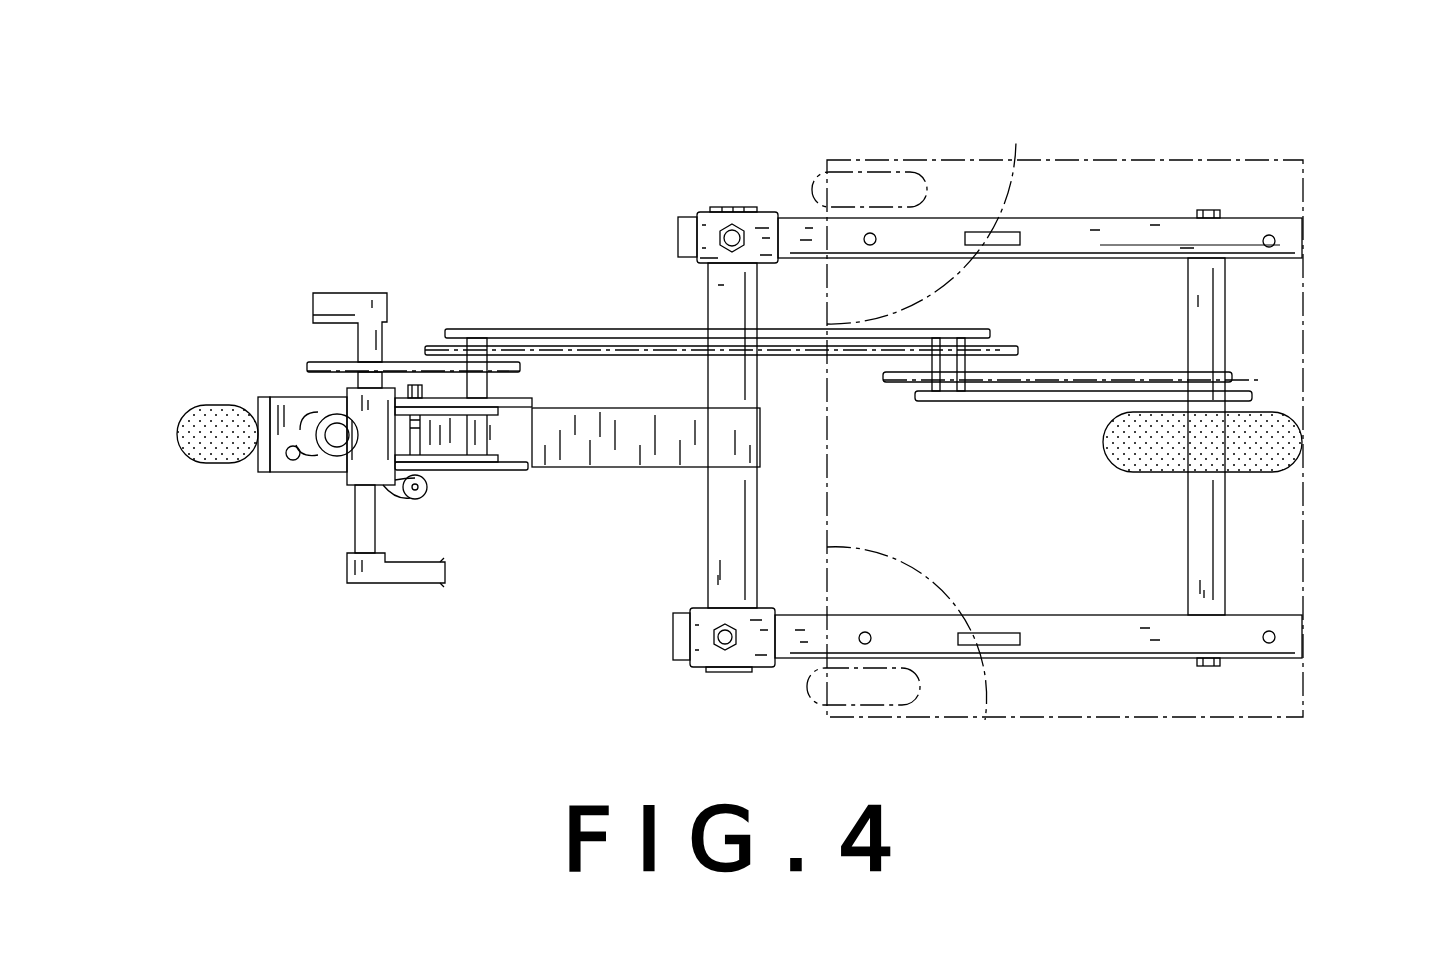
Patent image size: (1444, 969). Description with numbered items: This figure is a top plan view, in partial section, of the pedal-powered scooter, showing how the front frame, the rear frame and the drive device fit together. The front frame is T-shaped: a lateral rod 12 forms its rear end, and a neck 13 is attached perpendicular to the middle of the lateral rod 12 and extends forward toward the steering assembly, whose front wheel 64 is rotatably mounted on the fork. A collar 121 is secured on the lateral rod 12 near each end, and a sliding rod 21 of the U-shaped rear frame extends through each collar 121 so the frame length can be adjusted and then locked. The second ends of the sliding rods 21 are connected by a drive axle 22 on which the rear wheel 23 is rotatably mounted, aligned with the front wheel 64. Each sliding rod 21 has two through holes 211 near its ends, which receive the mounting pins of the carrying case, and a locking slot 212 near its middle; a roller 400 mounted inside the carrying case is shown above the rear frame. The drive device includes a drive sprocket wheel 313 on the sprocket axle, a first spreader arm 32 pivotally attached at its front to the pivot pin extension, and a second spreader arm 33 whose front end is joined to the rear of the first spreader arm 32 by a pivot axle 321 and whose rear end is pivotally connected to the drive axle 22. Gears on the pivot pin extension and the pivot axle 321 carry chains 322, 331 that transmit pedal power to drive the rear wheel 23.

The roller 400 is at (866, 180).
The locking slot 212 is at (1000, 232).
The collar 121 is at (706, 218).
The sliding rod 21 is at (800, 228).
The through hole 211 is at (1275, 241).
The chain 322 is at (583, 348).
The lateral rod 12 is at (718, 302).
The first spreader arm 32 is at (508, 332).
The drive sprocket wheel 313 is at (312, 360).
The pivot axle 321 is at (952, 365).
The chain 331 is at (1087, 372).
The front wheel 64 is at (215, 415).
The neck 13 is at (612, 458).
The second spreader arm 33 is at (985, 402).
The drive axle 22 is at (1195, 525).
The rear wheel 23 is at (1290, 432).